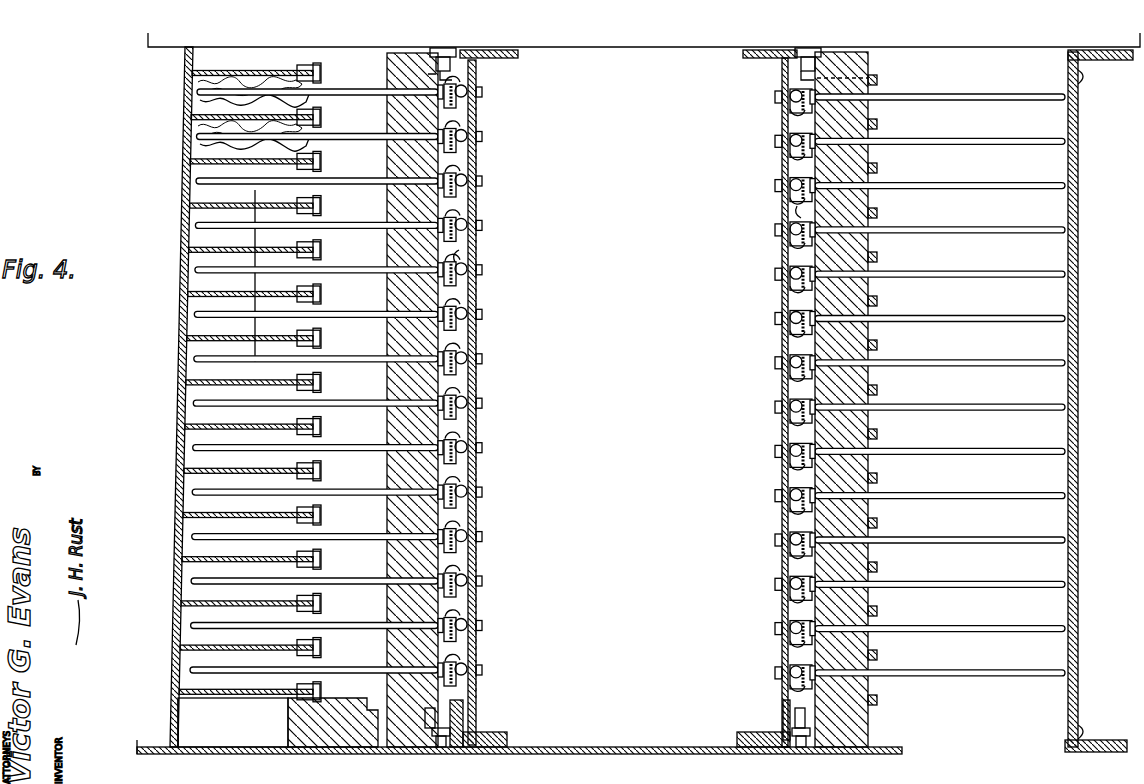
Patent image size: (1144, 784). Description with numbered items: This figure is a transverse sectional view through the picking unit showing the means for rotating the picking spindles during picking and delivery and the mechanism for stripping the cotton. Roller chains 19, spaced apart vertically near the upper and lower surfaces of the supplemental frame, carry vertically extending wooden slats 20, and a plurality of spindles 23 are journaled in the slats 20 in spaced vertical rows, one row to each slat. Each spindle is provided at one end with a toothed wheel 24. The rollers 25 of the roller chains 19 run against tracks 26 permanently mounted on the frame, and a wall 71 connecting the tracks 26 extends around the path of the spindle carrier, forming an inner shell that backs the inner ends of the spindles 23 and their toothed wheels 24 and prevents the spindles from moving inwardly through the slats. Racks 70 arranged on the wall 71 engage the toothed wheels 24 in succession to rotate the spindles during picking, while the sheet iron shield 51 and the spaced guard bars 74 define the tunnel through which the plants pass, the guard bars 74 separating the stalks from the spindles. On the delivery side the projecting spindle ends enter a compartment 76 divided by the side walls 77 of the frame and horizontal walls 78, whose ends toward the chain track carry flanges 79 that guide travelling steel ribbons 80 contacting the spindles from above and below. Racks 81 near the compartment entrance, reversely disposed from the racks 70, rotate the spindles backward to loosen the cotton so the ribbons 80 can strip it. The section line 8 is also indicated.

The section line 8- 8 is at (255, 200).
The roller chains 19 is at (438, 50).
The slats 20 is at (388, 157).
The spindles 23 is at (353, 495).
The toothed wheels 24 is at (470, 140).
The rollers 25 is at (478, 73).
The tracks 26 is at (495, 58).
The sheet iron shield 51 is at (1080, 256).
The racks 70 is at (782, 211).
The wall 71 is at (476, 545).
The guard bars 74 is at (876, 382).
The compartment 76 is at (182, 332).
The side walls 77 is at (176, 598).
The walls 78 is at (262, 695).
The flanges 79 is at (322, 380).
The steel ribbons 80 is at (322, 428).
The racks 81 is at (472, 258).